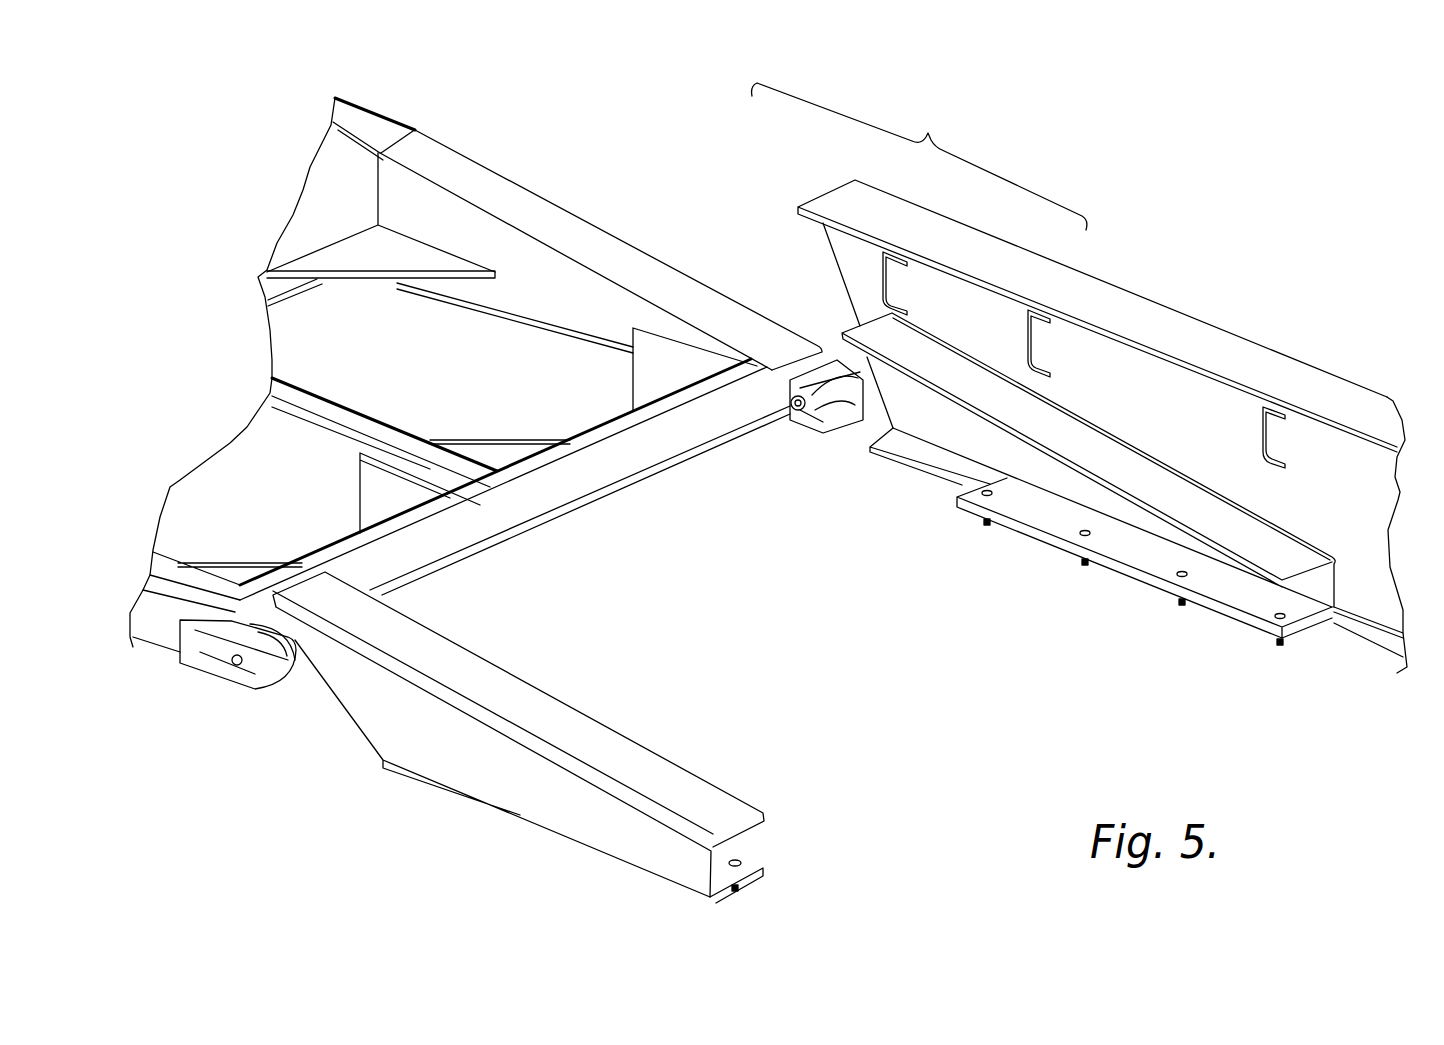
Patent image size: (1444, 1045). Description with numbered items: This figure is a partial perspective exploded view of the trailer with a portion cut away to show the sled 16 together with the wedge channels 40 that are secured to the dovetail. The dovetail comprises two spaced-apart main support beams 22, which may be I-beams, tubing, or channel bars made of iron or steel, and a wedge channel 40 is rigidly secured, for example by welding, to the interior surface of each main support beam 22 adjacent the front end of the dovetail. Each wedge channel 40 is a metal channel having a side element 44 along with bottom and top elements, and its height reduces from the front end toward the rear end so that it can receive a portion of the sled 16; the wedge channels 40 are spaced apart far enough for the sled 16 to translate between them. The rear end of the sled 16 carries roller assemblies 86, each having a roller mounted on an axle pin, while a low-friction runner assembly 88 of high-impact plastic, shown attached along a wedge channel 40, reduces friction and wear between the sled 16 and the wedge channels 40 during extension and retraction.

The sled 16 is at (567, 227).
The main support beams 22 is at (1183, 330).
The wedge channel 40 is at (520, 788).
The side element 44 is at (1017, 460).
The roller assembly 86 is at (268, 647).
The runner assembly 88 is at (1150, 562).